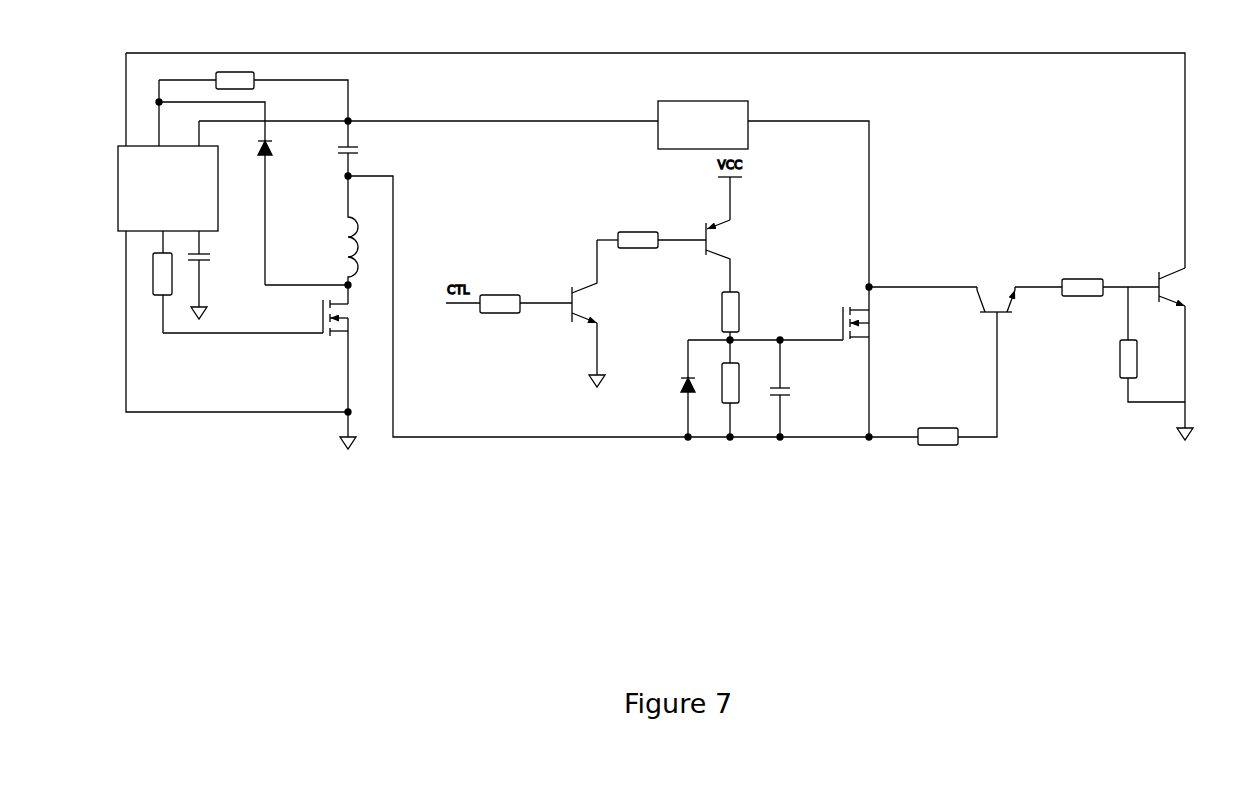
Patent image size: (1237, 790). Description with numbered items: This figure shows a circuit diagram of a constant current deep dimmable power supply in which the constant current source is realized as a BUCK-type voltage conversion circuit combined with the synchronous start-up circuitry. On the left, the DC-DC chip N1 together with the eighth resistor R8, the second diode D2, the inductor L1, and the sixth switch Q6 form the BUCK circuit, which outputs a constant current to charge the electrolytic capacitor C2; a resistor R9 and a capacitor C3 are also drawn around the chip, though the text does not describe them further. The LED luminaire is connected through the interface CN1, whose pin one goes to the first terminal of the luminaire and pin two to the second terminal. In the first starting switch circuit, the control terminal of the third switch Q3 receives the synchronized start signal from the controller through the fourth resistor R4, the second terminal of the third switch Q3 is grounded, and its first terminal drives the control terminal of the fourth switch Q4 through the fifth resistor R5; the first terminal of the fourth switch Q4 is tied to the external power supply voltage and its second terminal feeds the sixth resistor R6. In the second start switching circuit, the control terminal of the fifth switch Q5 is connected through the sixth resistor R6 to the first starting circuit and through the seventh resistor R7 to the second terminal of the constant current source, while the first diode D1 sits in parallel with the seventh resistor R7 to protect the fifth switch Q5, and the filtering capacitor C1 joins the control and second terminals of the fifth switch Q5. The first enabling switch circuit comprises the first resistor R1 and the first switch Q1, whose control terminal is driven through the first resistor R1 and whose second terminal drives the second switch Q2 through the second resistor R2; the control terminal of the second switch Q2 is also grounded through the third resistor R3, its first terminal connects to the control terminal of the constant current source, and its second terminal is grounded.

The DC-DC chip N1 is at (181, 188).
The resistor R9 is at (252, 101).
The second diode D2 is at (228, 193).
The electrolytic capacitor C2 is at (358, 161).
The inductor L1 is at (342, 240).
The sixth switch Q6 is at (351, 356).
The eighth resistor R8 is at (152, 282).
The capacitor C3 is at (209, 275).
The interface CN1 is at (703, 114).
The fifth resistor R5 is at (651, 231).
The fourth switch Q4 is at (733, 256).
The fourth resistor R4 is at (509, 296).
The third switch Q3 is at (596, 313).
The sixth resistor R6 is at (741, 316).
The seventh resistor R7 is at (741, 390).
The first diode D1 is at (672, 390).
The filtering capacitor C1 is at (791, 390).
The fifth switch Q5 is at (870, 323).
The first resistor R1 is at (938, 428).
The first switch Q1 is at (996, 287).
The second resistor R2 is at (1082, 278).
The third resistor R3 is at (1116, 359).
The second switch Q2 is at (1187, 354).